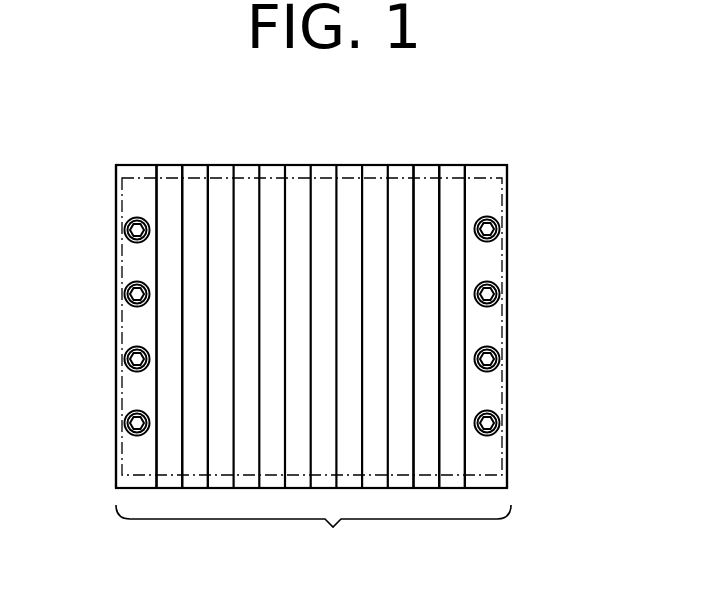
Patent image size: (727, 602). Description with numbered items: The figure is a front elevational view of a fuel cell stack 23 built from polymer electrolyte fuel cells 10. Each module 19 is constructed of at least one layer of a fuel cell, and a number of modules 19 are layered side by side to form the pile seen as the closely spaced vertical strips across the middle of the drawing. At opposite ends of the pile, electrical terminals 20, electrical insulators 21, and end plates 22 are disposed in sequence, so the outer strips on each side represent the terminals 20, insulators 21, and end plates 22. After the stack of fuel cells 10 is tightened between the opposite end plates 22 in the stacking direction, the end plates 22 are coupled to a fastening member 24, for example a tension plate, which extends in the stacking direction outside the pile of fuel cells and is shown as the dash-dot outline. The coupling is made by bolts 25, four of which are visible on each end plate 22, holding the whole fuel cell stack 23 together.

The polymer electrolyte fuel cell 10 is at (522, 430).
The module 19 is at (227, 168).
The electrical terminal 20 is at (190, 171).
The electrical insulator 21 is at (167, 171).
The end plate 22 is at (117, 166).
The fuel cell stack 23 is at (313, 534).
The fastening member 24 is at (131, 178).
The bolt 25 is at (125, 229).